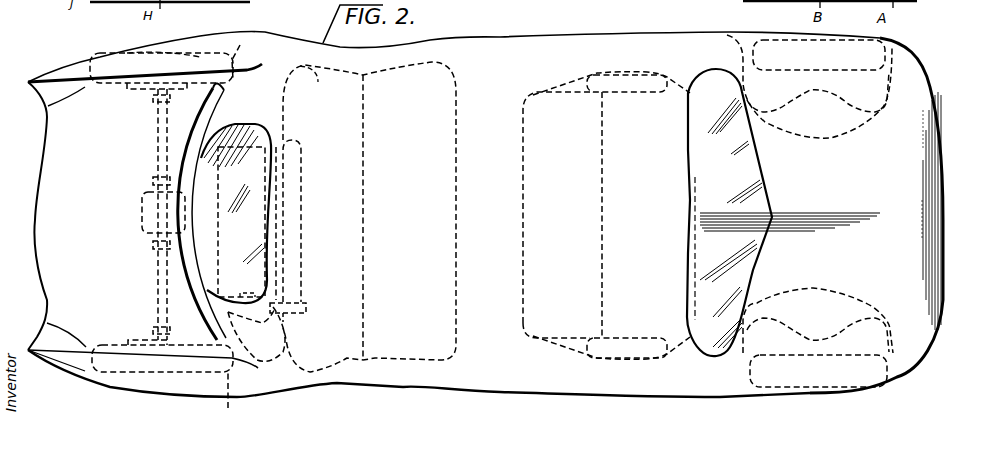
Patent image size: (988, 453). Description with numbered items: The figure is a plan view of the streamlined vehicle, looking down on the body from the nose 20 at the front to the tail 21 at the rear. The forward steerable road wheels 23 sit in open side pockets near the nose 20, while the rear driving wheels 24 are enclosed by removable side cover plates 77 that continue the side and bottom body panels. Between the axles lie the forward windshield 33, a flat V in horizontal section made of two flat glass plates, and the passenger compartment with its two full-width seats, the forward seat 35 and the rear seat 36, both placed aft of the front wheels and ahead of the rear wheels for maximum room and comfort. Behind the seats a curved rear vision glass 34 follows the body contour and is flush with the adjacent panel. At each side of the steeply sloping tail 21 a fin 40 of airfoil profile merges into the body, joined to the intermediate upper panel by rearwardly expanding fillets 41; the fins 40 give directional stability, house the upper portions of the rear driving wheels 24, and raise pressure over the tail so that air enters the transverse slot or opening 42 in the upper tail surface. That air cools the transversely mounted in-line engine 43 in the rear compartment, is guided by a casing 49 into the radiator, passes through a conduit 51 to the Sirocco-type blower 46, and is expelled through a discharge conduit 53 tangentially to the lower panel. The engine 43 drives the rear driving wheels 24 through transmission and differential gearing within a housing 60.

The nose 20 is at (937, 297).
The tail 21 is at (37, 247).
The forward steerable road wheels 23 is at (743, 64).
The rear driving wheels 24 is at (240, 45).
The forward windshield 33 is at (757, 197).
The curved rear vision glass 34 is at (262, 137).
The forward seat 35 is at (680, 188).
The rear seat 36 is at (457, 112).
The fins 40 is at (89, 55).
The fillets 41 is at (48, 106).
The slot or opening 42 is at (204, 113).
The engine 43 is at (215, 268).
The blower 46 is at (306, 313).
The casing 49 is at (302, 231).
The conduit 51 is at (298, 350).
The discharge conduit 53 is at (155, 177).
The housing 60 is at (142, 217).
The side cover plates 77 is at (198, 42).